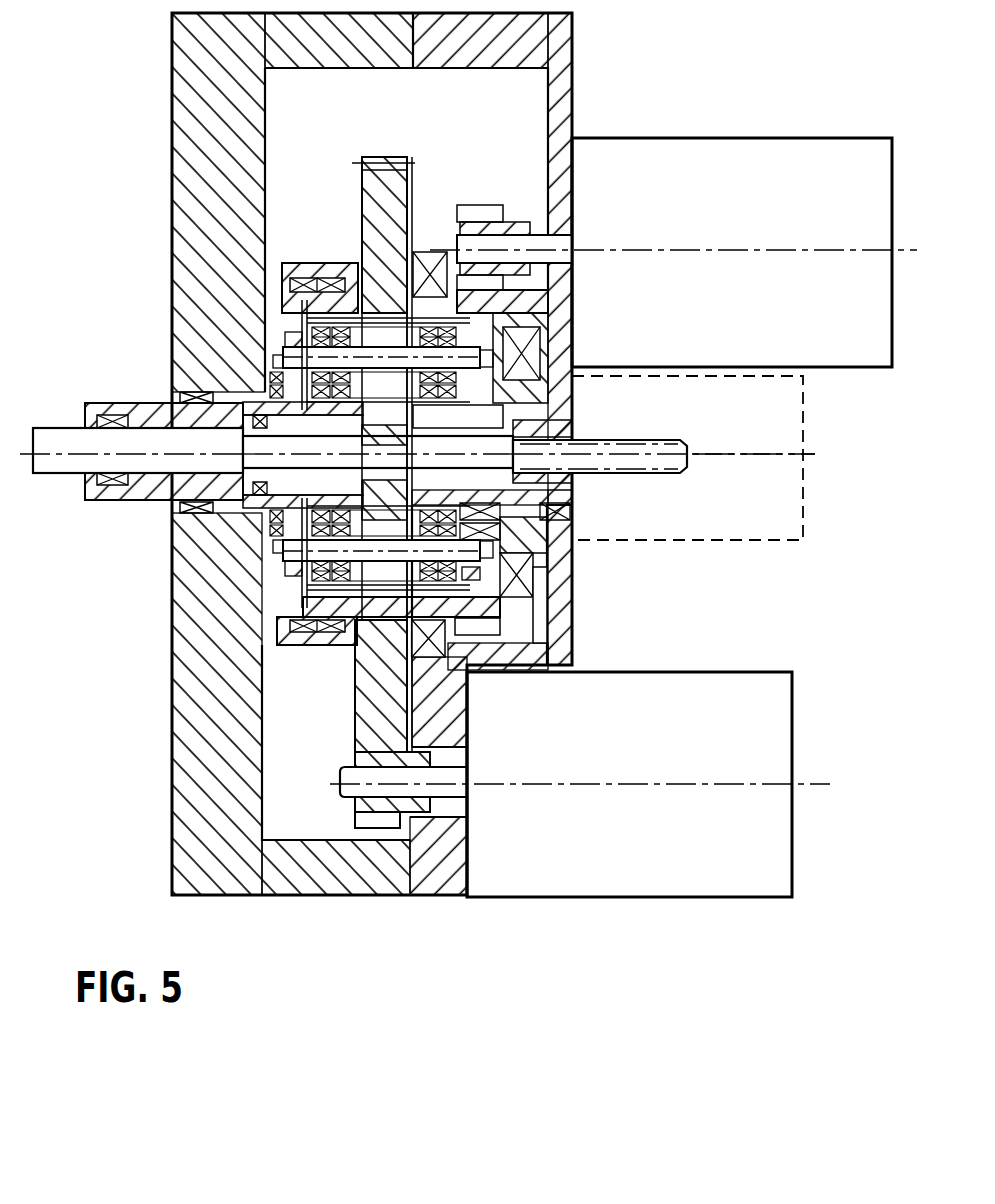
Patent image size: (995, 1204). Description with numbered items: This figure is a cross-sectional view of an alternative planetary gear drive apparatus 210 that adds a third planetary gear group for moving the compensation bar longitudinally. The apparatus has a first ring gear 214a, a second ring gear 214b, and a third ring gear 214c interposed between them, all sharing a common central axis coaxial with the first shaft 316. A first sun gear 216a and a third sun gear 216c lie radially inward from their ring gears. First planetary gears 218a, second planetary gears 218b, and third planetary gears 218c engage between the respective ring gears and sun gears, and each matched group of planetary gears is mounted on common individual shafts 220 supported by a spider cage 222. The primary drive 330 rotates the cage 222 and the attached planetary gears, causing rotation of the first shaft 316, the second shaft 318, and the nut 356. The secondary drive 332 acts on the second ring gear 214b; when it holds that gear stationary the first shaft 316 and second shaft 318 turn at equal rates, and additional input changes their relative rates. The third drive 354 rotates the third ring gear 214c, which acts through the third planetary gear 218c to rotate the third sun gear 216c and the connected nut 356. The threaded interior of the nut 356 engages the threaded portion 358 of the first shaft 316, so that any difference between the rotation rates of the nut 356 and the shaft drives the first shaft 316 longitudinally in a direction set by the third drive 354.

The gear drive apparatus 210 is at (108, 807).
The first ring gear 214a is at (556, 290).
The second ring gear 214b is at (268, 640).
The third ring gear 214c is at (372, 690).
The first sun gear 216a is at (425, 455).
The third sun gear 216c is at (362, 455).
The first planetary gear 218a is at (430, 252).
The second planetary gear 218b is at (330, 612).
The third planetary gear 218c is at (375, 300).
The common individual shafts 220 is at (572, 394).
The spider cage 222 is at (556, 333).
The first shaft 316 is at (64, 428).
The second shaft 318 is at (120, 403).
The primary drive 330 is at (690, 542).
The secondary drive 332 is at (790, 138).
The third drive 354 is at (764, 672).
The nut 356 is at (385, 492).
The threaded portion 358 is at (573, 498).